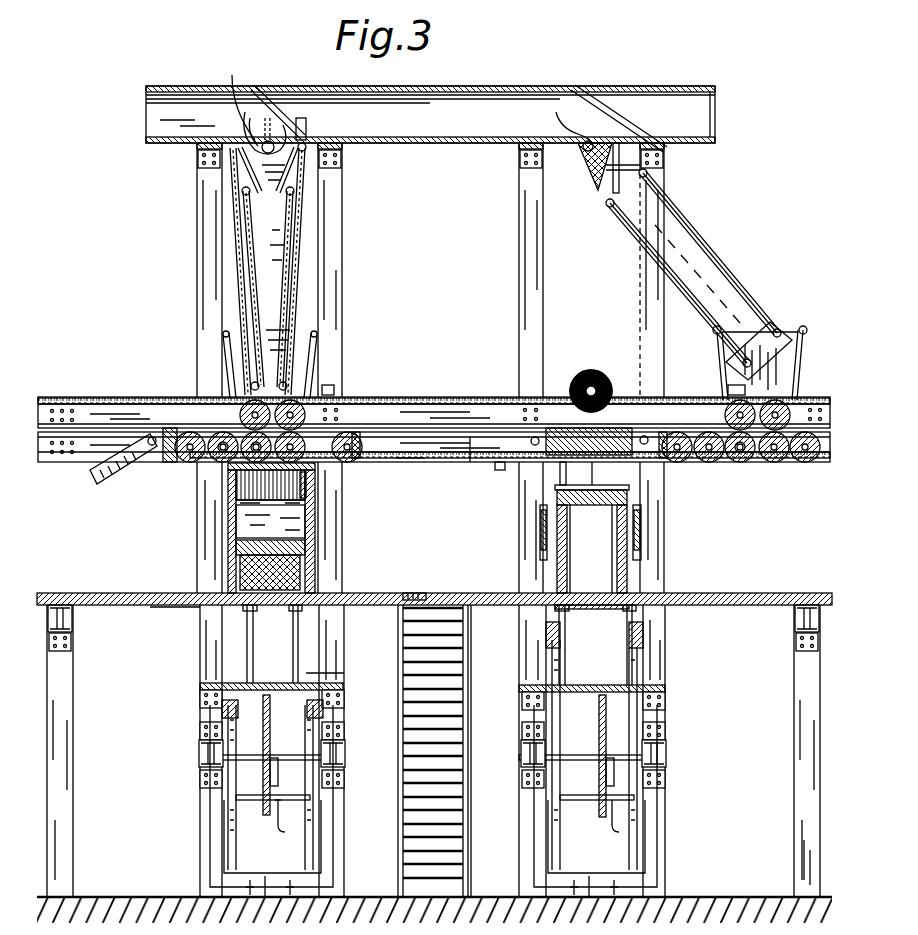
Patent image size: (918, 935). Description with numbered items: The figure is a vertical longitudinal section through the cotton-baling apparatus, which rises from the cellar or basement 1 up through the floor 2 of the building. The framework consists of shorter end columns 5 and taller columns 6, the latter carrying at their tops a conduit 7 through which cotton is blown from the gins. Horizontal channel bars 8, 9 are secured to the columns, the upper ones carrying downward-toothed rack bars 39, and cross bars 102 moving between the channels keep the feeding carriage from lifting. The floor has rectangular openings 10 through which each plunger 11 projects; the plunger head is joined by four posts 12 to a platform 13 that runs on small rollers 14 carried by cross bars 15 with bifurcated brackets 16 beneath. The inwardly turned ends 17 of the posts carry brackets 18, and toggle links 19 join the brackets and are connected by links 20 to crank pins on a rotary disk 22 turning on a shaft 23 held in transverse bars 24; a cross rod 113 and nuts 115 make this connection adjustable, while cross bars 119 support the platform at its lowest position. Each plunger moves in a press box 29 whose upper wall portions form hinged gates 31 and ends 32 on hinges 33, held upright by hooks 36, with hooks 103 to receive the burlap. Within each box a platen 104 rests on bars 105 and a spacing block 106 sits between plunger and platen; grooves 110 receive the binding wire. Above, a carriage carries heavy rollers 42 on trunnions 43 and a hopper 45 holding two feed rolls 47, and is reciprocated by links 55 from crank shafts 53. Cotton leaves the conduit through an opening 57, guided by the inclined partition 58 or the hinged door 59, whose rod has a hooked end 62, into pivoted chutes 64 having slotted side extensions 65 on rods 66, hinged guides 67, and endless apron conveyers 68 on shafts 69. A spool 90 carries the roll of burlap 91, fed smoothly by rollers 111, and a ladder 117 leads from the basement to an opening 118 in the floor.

The cellar or basement 1 is at (764, 800).
The floor 2 is at (98, 603).
The vertical columns 5 is at (65, 715).
The vertical columns 6 is at (200, 622).
The conduit 7 is at (495, 90).
The channel bars 8 is at (481, 413).
The channel bars 9 is at (190, 313).
The rectangular openings 10 is at (165, 606).
The plunger 11 is at (270, 620).
The posts 12 is at (282, 632).
The platform 13 is at (263, 683).
The rollers 14 is at (709, 895).
The cross bars 15 is at (218, 700).
The bifurcated brackets 16 is at (230, 710).
The inwardly turned ends 17 is at (290, 882).
The brackets 18 is at (224, 870).
The toggle links 19 is at (228, 736).
The links 20 is at (278, 772).
The rotary disk 22 is at (263, 722).
The shaft 23 is at (222, 766).
The transverse bars 24 is at (215, 757).
The press box 29 is at (312, 530).
The hinged gates 31 is at (228, 520).
The ends 32 is at (240, 520).
The hinges 33 is at (542, 515).
The hooks 36 is at (406, 458).
The rack bars 39 is at (434, 398).
The rollers 42 is at (230, 470).
The trunnions 43 is at (215, 464).
The hopper 45 is at (330, 358).
The rolls 47 is at (334, 387).
The crank shafts 53 is at (592, 425).
The links 55 is at (115, 467).
The opening 57 is at (399, 104).
The inclined partition 58 is at (612, 104).
The hinged door 59 is at (284, 90).
The hooked end 62 is at (560, 464).
The pivoted chutes 64 is at (240, 262).
The slotted side extensions 65 is at (252, 118).
The rods 66 is at (306, 120).
The hinged guides 67 is at (243, 168).
The endless apron conveyers 68 is at (255, 277).
The shafts 69 is at (293, 187).
The roller or spool 90 is at (586, 371).
The roll of burlap 91 is at (606, 366).
The cross bars 102 is at (168, 400).
The hooks 103 is at (236, 490).
The platen 104 is at (245, 510).
The bars 105 is at (236, 548).
The block 106 is at (245, 575).
The grooves 110 is at (228, 468).
The rollers 111 is at (500, 466).
The cross rod 113 is at (240, 797).
The nuts 115 is at (280, 828).
The ladder 117 is at (470, 700).
The opening 118 is at (437, 578).
The cross bars 119 is at (320, 673).